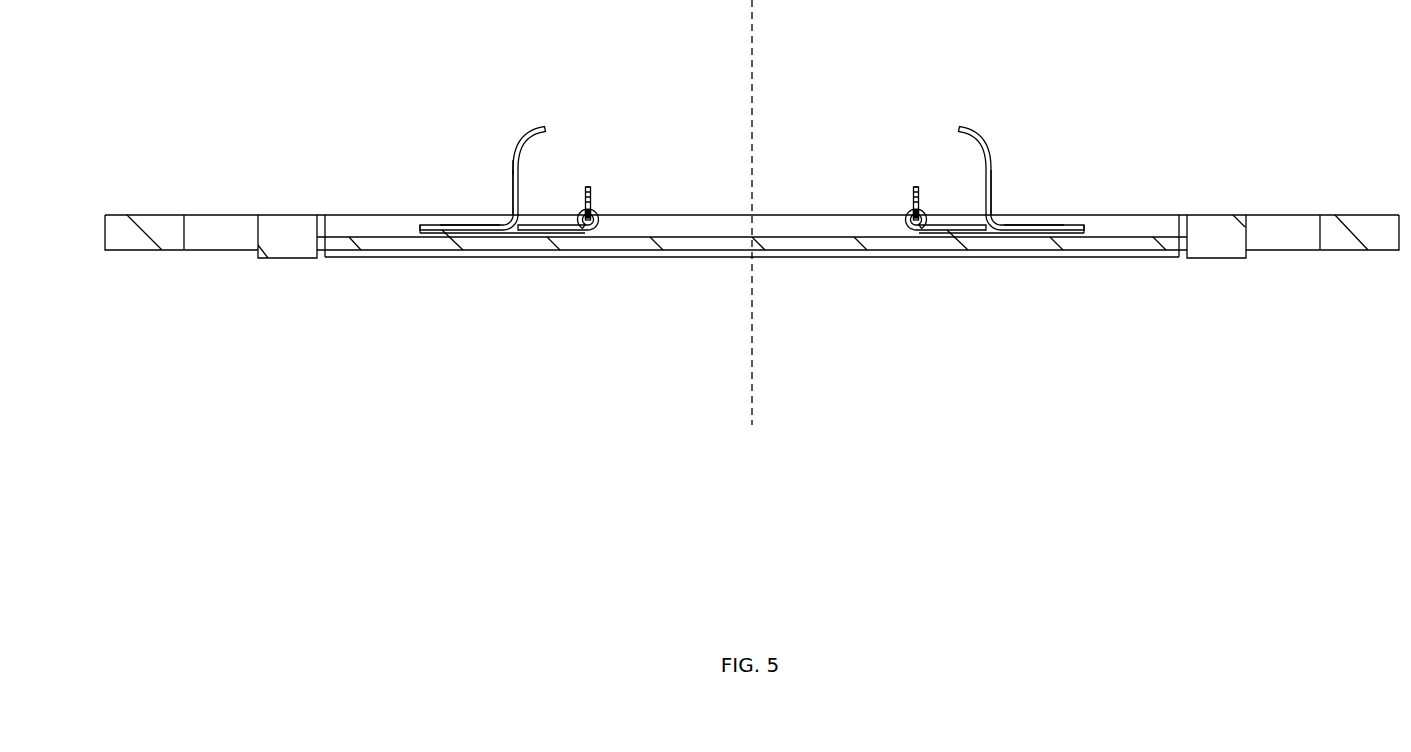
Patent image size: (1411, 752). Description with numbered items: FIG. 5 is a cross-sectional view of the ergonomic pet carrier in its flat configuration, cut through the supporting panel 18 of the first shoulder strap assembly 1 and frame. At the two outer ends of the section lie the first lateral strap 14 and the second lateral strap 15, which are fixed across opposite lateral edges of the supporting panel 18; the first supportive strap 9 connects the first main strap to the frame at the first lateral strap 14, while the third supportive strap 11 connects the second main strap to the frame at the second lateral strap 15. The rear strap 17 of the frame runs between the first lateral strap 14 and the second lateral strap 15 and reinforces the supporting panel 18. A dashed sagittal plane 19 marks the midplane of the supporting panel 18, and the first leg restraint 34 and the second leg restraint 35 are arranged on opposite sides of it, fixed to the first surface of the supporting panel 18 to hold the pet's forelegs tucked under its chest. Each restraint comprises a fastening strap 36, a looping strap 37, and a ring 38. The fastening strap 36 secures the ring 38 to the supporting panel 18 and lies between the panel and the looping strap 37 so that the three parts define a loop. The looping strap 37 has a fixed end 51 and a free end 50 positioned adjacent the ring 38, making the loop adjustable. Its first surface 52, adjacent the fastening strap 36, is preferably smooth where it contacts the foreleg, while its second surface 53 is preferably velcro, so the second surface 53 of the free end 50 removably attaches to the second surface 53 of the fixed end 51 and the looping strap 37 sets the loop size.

The first shoulder strap assembly 1 is at (235, 180).
The first supportive strap 9 is at (130, 247).
The third supportive strap 11 is at (1337, 247).
The first lateral strap 14 is at (292, 248).
The second lateral strap 15 is at (1215, 250).
The rear strap 17 is at (832, 223).
The supporting panel 18 is at (705, 240).
The sagittal plane 19 is at (752, 97).
The first leg restraint 34 is at (596, 182).
The second leg restraint 35 is at (905, 182).
The fastening strap 36 is at (422, 233).
The looping strap 37 is at (466, 225).
The ring 38 is at (591, 197).
The free end 50 is at (543, 126).
The fixed end 51 is at (420, 215).
The first surface 52 is at (521, 184).
The second surface 53 is at (512, 163).